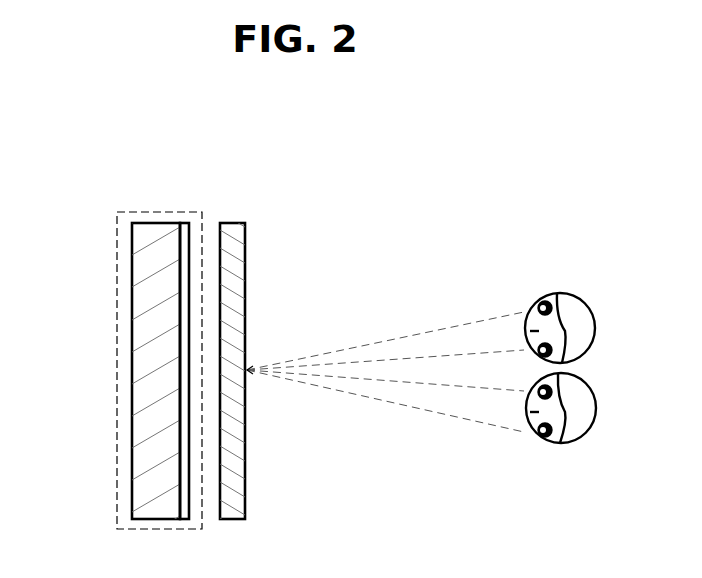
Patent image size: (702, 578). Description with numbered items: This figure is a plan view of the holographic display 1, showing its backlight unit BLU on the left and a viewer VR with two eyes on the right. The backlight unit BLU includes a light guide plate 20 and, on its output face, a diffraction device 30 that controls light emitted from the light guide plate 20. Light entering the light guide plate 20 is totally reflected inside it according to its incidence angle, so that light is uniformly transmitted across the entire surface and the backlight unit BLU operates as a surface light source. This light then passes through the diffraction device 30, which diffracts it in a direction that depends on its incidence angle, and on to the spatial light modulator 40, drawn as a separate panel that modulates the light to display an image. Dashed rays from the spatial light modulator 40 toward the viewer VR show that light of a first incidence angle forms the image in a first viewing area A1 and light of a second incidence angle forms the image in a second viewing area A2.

The holographic display 1 is at (80, 189).
The backlight unit BLU is at (115, 370).
The light guide plate 20 is at (153, 230).
The diffraction device 30 is at (186, 230).
The spatial light modulator 40 is at (236, 230).
The first viewing area A1 is at (311, 365).
The second viewing area A2 is at (311, 377).
The viewer VR is at (568, 297).